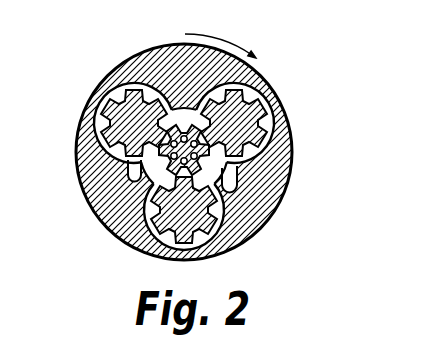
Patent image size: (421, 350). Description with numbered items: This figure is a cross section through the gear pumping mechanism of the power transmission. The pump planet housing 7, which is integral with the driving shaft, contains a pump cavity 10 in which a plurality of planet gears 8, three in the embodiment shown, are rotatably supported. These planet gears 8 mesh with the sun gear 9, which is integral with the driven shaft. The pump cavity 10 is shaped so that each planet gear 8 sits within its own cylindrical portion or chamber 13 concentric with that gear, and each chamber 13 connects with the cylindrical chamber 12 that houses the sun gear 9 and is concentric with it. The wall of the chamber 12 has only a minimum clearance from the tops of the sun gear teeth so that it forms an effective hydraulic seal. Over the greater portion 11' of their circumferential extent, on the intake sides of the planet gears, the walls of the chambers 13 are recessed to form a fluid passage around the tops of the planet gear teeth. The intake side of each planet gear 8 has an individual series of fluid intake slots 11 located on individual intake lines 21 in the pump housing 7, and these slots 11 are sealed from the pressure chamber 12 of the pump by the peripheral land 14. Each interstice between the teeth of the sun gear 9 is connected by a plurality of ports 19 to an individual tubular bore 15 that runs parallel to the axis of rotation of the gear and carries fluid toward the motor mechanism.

The pump planet housing 7 is at (242, 207).
The planet gears 8 is at (259, 90).
The sun gear 9 is at (127, 82).
The pump cavity 10 is at (200, 154).
The fluid intake slots 11 is at (84, 163).
The recessed portion of chamber walls 11' is at (134, 155).
The cylindrical chamber 12 is at (172, 100).
The cylindrical portion or chamber 13 is at (158, 95).
The peripheral land 14 is at (158, 196).
The tubular bore 15 is at (212, 132).
The ports 19 is at (256, 153).
The intake lines 21 is at (122, 190).